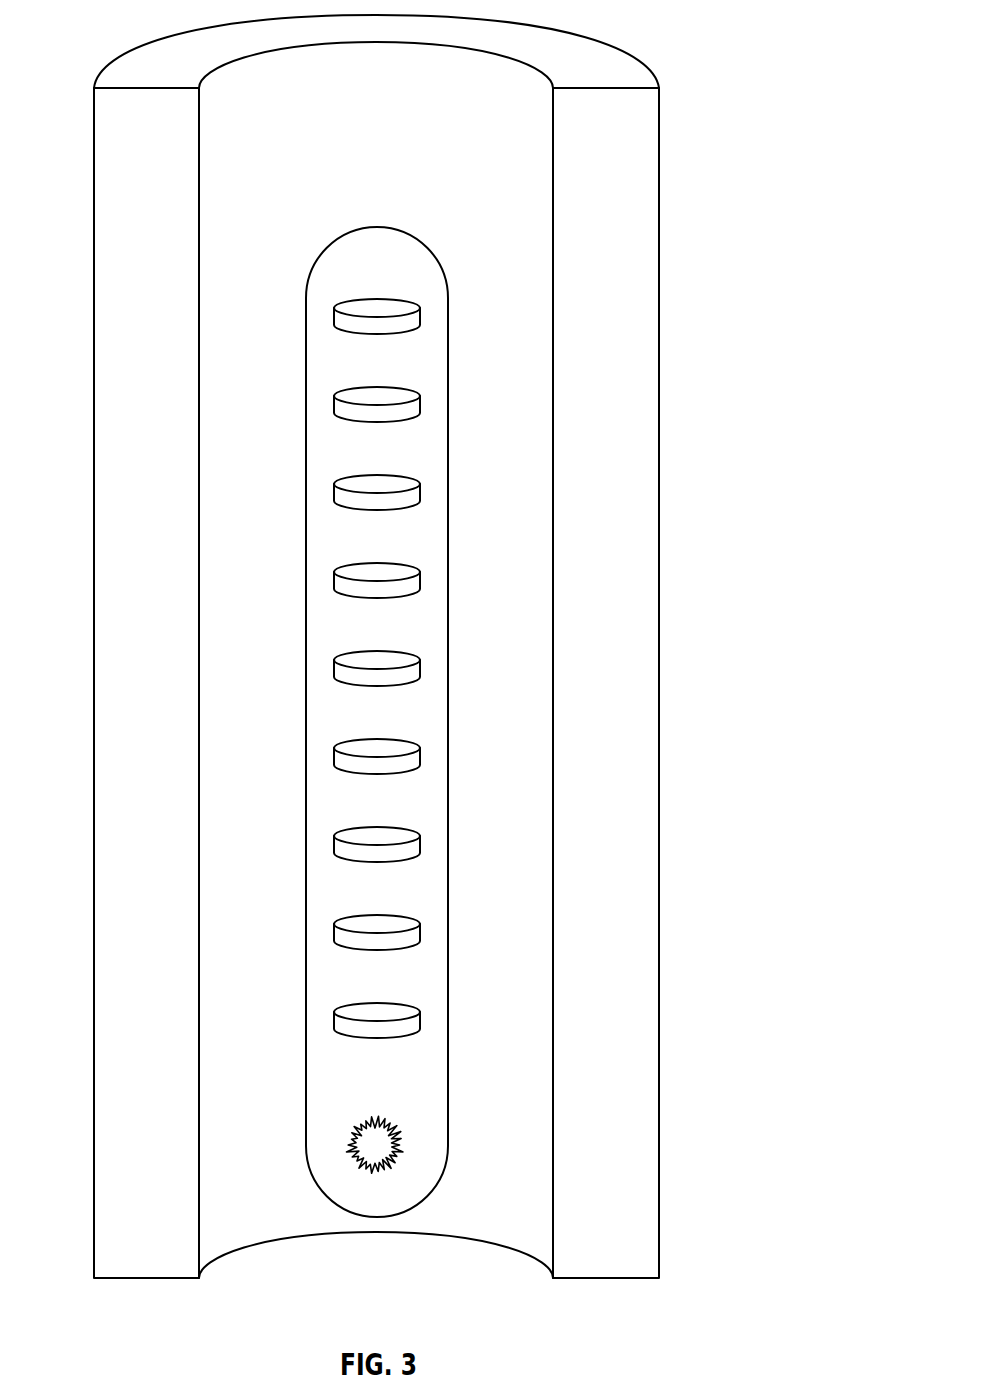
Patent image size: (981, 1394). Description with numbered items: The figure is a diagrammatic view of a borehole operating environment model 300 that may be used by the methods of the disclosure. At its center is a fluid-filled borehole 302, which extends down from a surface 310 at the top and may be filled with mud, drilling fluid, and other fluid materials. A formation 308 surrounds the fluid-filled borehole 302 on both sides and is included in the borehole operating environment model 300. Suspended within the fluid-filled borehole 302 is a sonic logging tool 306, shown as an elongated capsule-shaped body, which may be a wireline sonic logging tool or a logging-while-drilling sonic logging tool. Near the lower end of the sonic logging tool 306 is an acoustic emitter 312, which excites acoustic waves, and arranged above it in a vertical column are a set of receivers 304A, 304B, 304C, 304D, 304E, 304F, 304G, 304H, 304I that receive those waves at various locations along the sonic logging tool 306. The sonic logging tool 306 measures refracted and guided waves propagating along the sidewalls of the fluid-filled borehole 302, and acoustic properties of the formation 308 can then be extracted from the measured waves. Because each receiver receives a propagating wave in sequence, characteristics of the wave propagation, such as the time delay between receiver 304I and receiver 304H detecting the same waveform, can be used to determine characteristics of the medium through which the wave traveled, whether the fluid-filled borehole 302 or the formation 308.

The borehole operating environment model 300 is at (422, 640).
The fluid-filled borehole 302 is at (461, 722).
The receiver 304A is at (333, 318).
The receiver 304B is at (333, 406).
The receiver 304C is at (333, 494).
The receiver 304D is at (333, 582).
The receiver 304E is at (333, 670).
The receiver 304F is at (333, 758).
The receiver 304G is at (333, 846).
The receiver 304H is at (333, 934).
The receiver 304I is at (333, 1022).
The sonic logging tool 306 is at (448, 358).
The formation 308 is at (660, 152).
The surface 310 is at (118, 58).
The acoustic emitter 312 is at (333, 1143).